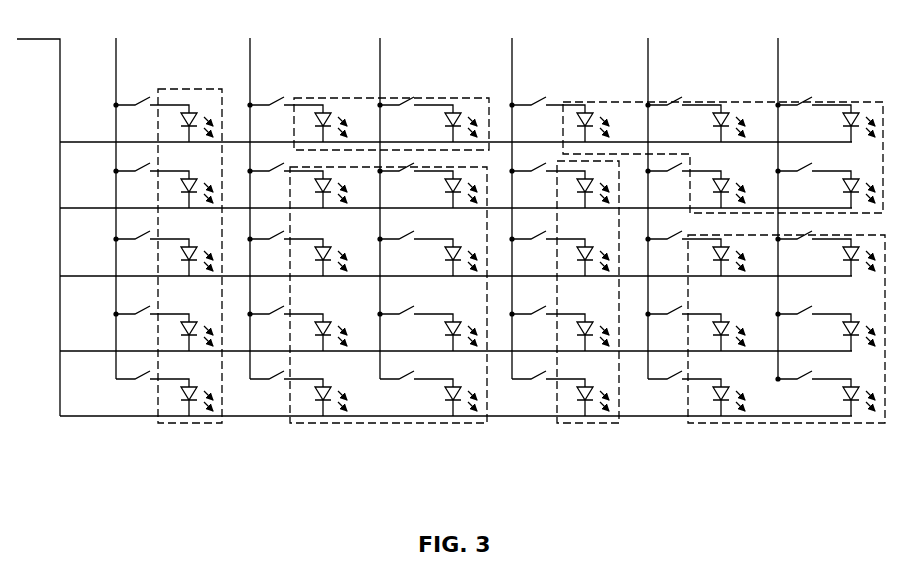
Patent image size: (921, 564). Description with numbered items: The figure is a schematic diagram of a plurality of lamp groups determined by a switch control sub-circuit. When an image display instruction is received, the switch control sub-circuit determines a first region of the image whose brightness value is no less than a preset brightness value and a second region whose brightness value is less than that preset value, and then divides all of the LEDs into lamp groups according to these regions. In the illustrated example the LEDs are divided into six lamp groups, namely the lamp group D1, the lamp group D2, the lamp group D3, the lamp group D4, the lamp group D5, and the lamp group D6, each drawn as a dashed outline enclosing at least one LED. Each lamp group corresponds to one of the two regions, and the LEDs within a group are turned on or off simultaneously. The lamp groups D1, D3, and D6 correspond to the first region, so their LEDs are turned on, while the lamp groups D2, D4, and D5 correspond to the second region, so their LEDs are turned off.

The lamp group D1 is at (186, 88).
The lamp group D2 is at (436, 98).
The lamp group D3 is at (423, 423).
The lamp group D4 is at (592, 423).
The lamp group D5 is at (775, 423).
The lamp group D6 is at (837, 101).